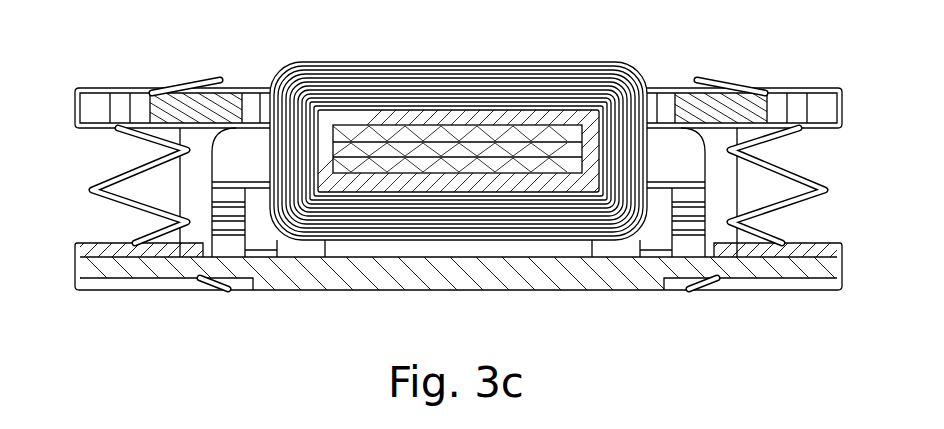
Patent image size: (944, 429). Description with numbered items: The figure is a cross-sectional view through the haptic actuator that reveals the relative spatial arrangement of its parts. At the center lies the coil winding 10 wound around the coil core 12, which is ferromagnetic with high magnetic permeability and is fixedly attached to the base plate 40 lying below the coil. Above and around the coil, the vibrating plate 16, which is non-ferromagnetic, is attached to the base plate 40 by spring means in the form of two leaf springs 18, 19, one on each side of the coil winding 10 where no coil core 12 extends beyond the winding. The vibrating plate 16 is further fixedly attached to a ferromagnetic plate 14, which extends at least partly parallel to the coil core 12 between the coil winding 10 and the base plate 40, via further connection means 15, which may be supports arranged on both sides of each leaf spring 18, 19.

The coil winding 10 is at (447, 88).
The coil core 12 is at (392, 150).
The ferromagnetic plate 14 is at (653, 212).
The further connection means 15 is at (198, 153).
The vibrating plate 16 is at (188, 105).
The leaf spring 18 is at (807, 177).
The leaf spring 19 is at (118, 205).
The base plate 40 is at (543, 265).